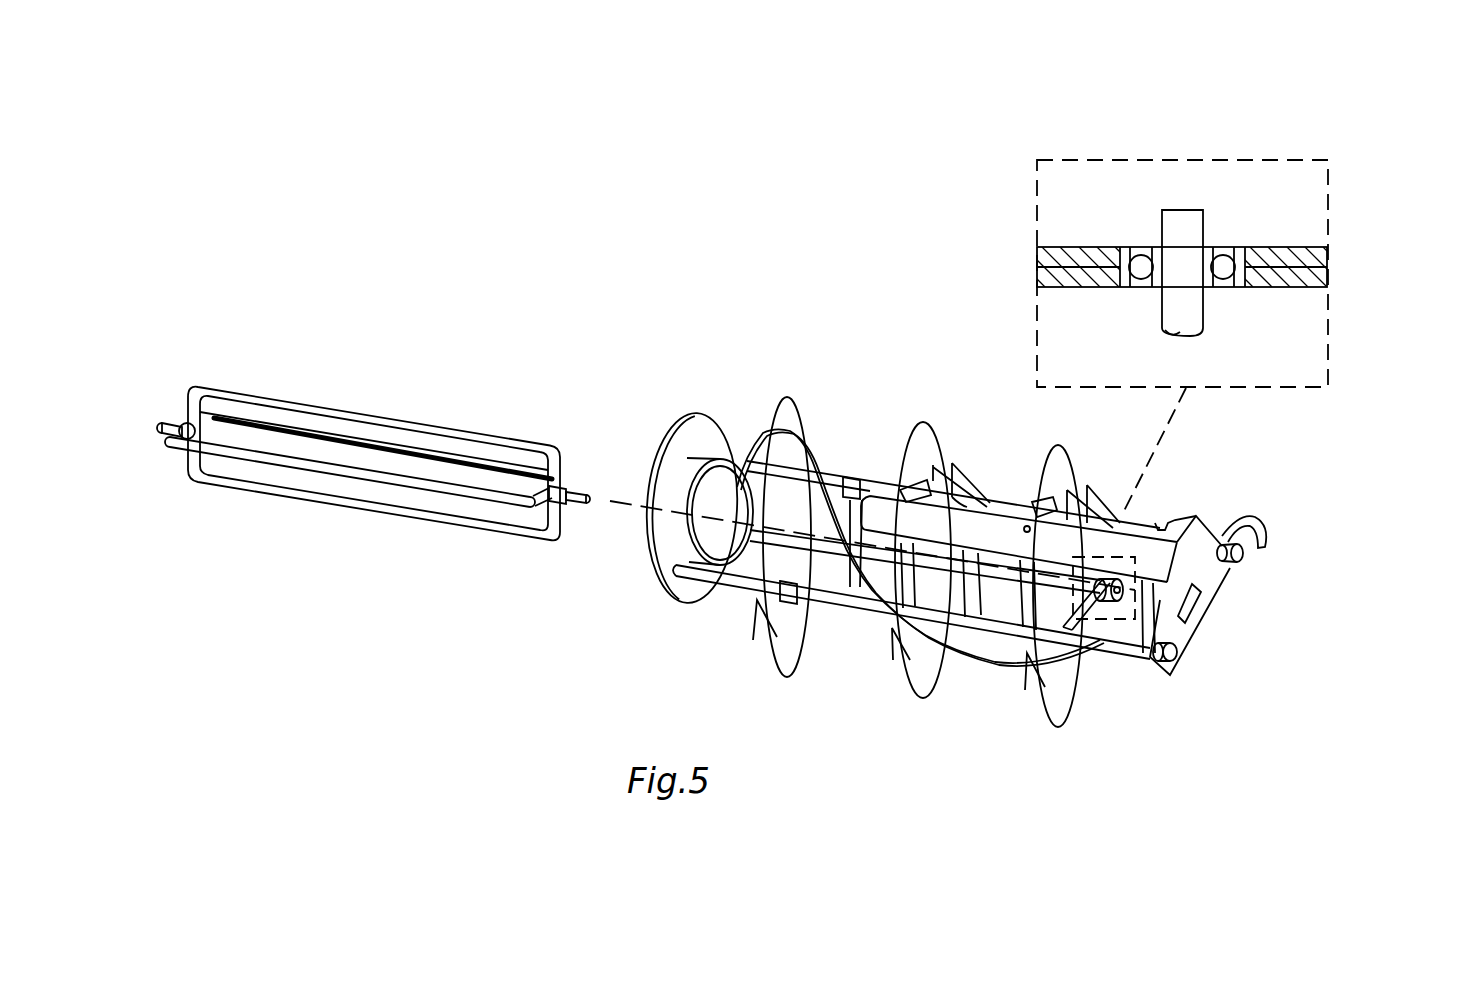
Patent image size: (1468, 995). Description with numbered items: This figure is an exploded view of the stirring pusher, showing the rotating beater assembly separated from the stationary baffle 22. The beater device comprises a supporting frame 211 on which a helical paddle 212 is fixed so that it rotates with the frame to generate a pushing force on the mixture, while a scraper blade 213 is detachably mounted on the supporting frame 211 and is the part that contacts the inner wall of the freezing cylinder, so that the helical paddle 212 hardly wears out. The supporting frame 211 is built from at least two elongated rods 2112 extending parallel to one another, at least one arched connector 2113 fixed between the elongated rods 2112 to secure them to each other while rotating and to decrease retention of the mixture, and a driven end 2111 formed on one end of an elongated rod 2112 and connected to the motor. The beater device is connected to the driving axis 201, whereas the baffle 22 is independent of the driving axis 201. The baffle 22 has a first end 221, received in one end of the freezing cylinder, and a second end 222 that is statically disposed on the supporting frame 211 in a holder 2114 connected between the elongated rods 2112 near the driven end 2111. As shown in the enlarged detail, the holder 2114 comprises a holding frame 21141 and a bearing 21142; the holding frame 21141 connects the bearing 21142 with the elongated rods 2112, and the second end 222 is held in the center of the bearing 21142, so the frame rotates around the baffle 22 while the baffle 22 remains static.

The baffle 22 is at (457, 517).
The first end 221 is at (177, 424).
The second end 222 is at (579, 487).
The driving axis 201 is at (623, 513).
The supporting frame 211 is at (1170, 633).
The driven end 2111 is at (1193, 613).
The elongated rods 2112 is at (750, 580).
The arched connector 2113 is at (958, 485).
The holder 2114 is at (1278, 227).
The holding frame 21141 is at (1298, 287).
The bearing 21142 is at (1222, 263).
The helical paddle 212 is at (792, 447).
The scraper blade 213 is at (958, 537).